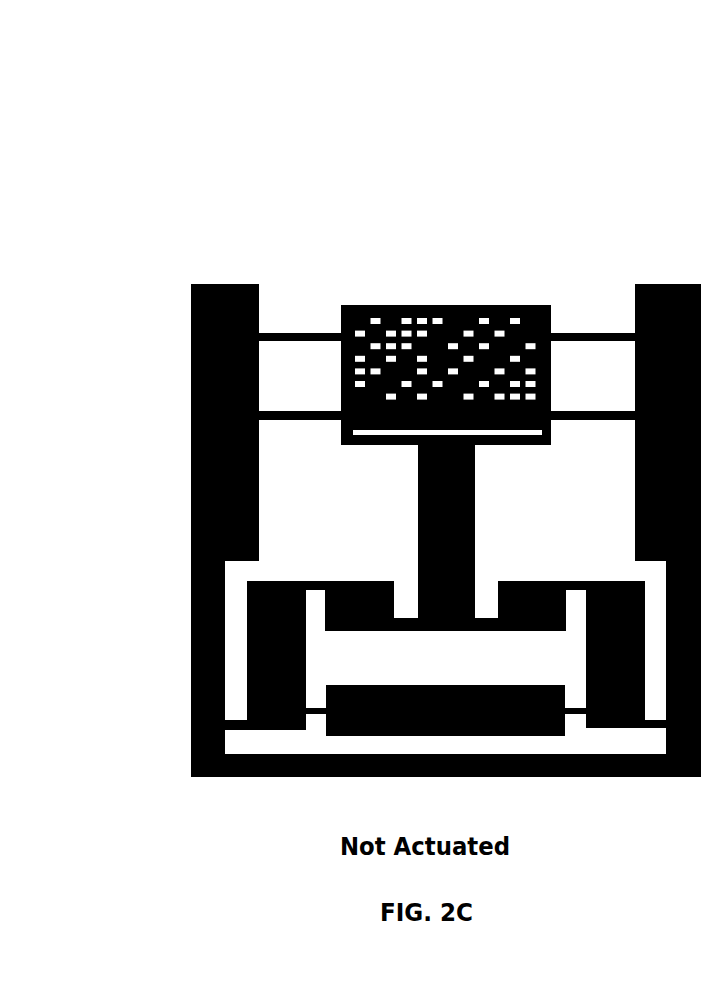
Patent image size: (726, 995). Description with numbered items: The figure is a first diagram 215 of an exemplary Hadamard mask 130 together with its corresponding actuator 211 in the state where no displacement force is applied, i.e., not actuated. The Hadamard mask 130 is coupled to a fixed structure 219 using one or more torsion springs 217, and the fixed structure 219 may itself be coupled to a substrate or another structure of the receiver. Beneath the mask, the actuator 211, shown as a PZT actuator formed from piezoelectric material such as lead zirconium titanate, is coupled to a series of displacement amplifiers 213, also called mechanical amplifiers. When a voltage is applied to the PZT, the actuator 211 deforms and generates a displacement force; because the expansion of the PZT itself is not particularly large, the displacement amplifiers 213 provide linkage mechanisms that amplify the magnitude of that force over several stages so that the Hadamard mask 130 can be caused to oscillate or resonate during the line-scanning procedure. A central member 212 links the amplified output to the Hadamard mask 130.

The first diagram 215 is at (168, 30).
The Hadamard mask 130 is at (445, 297).
The torsion springs 217 is at (600, 333).
The fixed structure 219 is at (657, 274).
The shuttle / stem 212 is at (415, 488).
The displacement amplifiers 213 is at (250, 648).
The actuator 211 is at (328, 725).